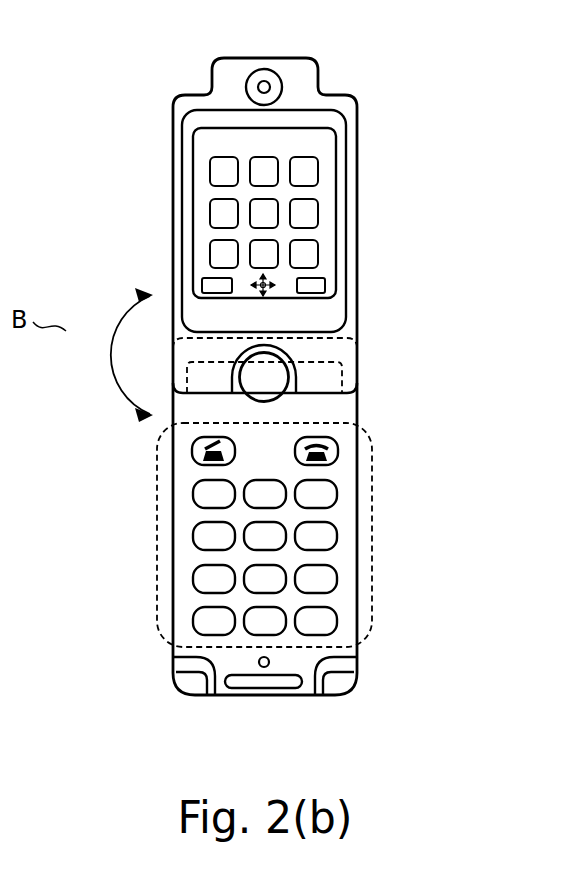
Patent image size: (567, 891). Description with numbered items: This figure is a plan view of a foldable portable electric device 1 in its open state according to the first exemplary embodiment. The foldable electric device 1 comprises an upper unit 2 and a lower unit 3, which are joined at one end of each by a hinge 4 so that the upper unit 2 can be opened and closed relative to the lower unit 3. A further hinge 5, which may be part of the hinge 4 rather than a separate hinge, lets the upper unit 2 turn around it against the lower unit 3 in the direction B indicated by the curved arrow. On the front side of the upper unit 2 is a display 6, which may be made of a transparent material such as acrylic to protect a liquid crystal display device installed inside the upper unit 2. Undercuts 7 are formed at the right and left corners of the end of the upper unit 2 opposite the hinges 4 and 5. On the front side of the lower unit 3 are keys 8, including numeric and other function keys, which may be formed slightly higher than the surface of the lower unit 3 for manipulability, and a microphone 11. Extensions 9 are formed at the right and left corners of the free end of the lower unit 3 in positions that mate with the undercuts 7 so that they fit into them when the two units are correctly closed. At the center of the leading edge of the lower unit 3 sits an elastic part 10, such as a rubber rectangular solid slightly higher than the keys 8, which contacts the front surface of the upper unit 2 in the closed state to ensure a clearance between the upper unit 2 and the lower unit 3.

The foldable electric device 1 is at (372, 176).
The upper unit 2 is at (355, 231).
The lower unit 3 is at (342, 443).
The hinge 4 is at (323, 375).
The hinge 5 is at (263, 376).
The display 6 is at (186, 232).
The undercuts 7 is at (212, 82).
The keys 8 is at (372, 521).
The extensions 9 is at (199, 683).
The elastic part 10 is at (254, 682).
The microphone 11 is at (265, 669).